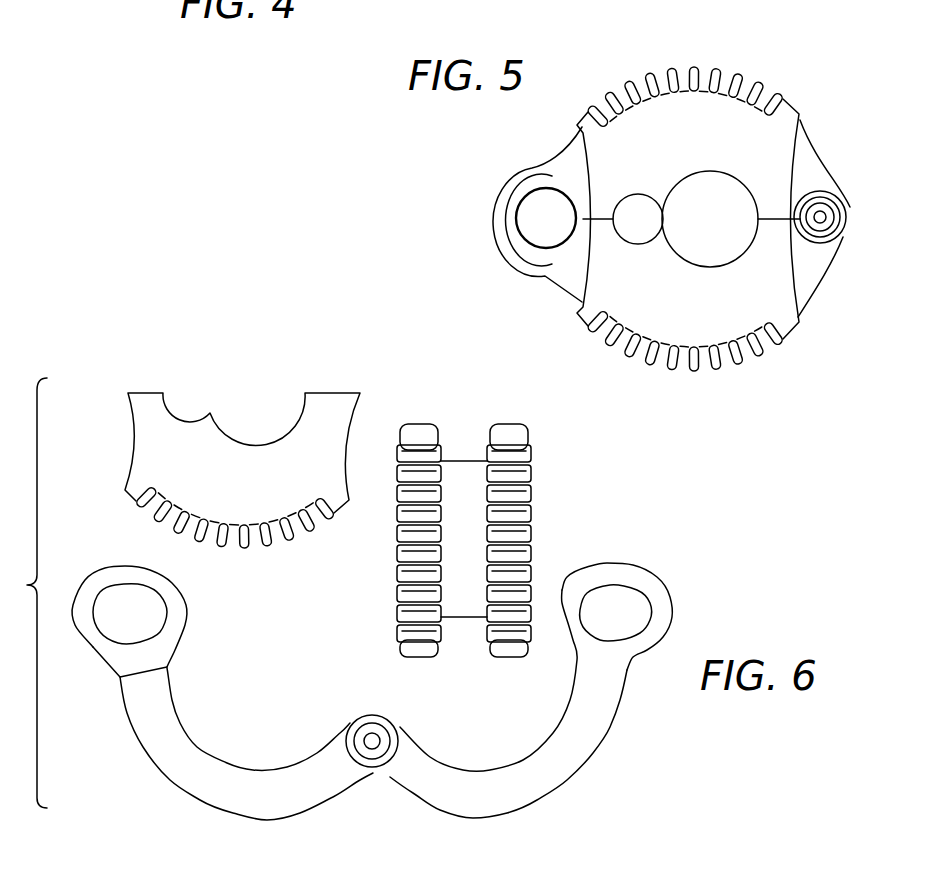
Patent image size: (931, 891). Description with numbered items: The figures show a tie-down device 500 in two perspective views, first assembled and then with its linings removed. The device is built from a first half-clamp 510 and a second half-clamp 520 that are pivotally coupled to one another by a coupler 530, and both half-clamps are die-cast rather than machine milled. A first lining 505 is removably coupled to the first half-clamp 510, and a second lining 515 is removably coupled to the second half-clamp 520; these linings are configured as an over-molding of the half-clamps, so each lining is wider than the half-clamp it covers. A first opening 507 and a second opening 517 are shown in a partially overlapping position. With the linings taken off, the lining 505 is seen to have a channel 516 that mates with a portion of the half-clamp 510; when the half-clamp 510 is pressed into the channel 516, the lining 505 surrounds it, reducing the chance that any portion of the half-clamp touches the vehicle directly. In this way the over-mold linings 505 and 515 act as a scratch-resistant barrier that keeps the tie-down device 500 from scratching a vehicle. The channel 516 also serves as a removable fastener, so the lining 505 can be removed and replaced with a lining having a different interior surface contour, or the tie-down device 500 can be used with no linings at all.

In FIG. 5, the tie-down device 500 is at (790, 62).
In FIG. 6, the tie-down device 500 is at (181, 365).
In FIG. 5, the first lining 505 is at (663, 107).
In FIG. 6, the first lining 505 is at (518, 483).
In FIG. 5, the first opening 507 is at (545, 210).
In FIG. 6, the first opening 507 is at (622, 605).
In FIG. 5, the first half-clamp 510 is at (813, 168).
In FIG. 6, the first half-clamp 510 is at (593, 728).
In FIG. 5, the second lining 515 is at (723, 337).
In FIG. 6, the second lining 515 is at (152, 452).
In FIG. 6, the channel 516 is at (475, 460).
In FIG. 5, the second opening 517 is at (545, 231).
In FIG. 6, the second opening 517 is at (118, 617).
In FIG. 5, the second half-clamp 520 is at (803, 282).
In FIG. 6, the second half-clamp 520 is at (170, 760).
In FIG. 5, the coupler 530 is at (825, 219).